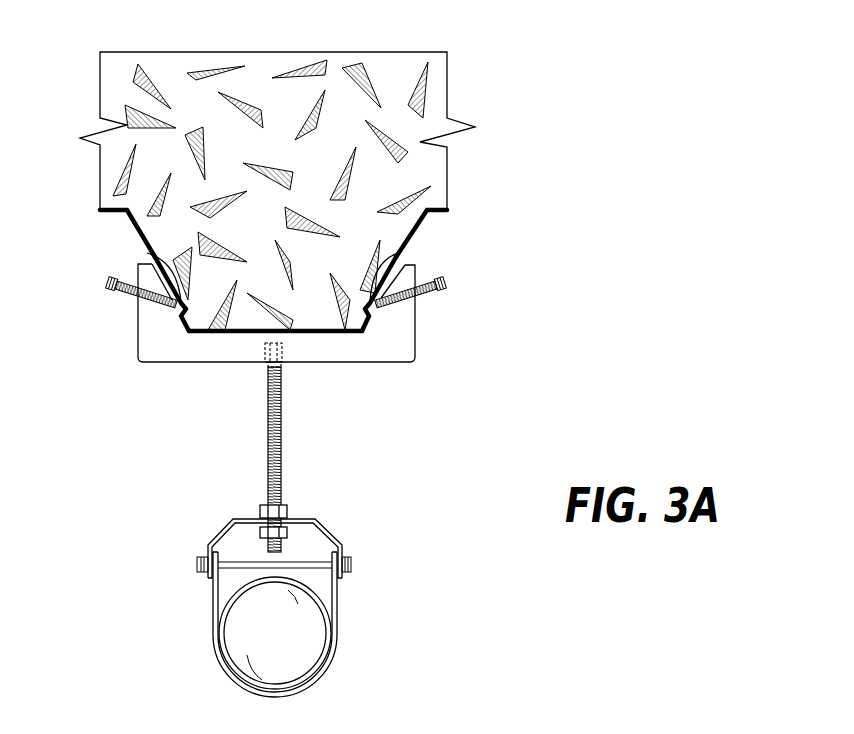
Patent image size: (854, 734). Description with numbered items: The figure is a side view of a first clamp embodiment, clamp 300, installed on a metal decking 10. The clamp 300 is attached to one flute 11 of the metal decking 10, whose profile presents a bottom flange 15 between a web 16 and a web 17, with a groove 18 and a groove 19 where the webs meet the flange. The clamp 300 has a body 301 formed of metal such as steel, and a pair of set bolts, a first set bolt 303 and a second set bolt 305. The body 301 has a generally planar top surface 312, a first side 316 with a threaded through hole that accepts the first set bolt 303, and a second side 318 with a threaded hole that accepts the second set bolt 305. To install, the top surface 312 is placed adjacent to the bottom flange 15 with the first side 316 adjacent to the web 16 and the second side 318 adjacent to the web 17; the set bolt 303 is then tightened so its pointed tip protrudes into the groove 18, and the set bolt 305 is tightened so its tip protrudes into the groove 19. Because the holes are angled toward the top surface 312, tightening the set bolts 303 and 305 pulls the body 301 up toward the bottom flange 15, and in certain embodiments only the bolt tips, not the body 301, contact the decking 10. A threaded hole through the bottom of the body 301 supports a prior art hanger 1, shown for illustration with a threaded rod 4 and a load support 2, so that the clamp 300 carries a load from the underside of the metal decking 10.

The metal decking 10 is at (235, 42).
The bottom flange 15 is at (263, 332).
The web 16 is at (128, 220).
The web 17 is at (418, 230).
The groove 18 is at (147, 253).
The groove 19 is at (398, 253).
The clamp 300 is at (543, 343).
The body 301 is at (415, 345).
The first set bolt 303 is at (106, 283).
The second set bolt 305 is at (447, 283).
The top surface 312 is at (318, 336).
The first side 316 is at (138, 322).
The second side 318 is at (415, 320).
The flute 11 is at (212, 397).
The threaded rod 4 is at (282, 468).
The hanger 1 is at (453, 538).
The load support 2 is at (385, 603).